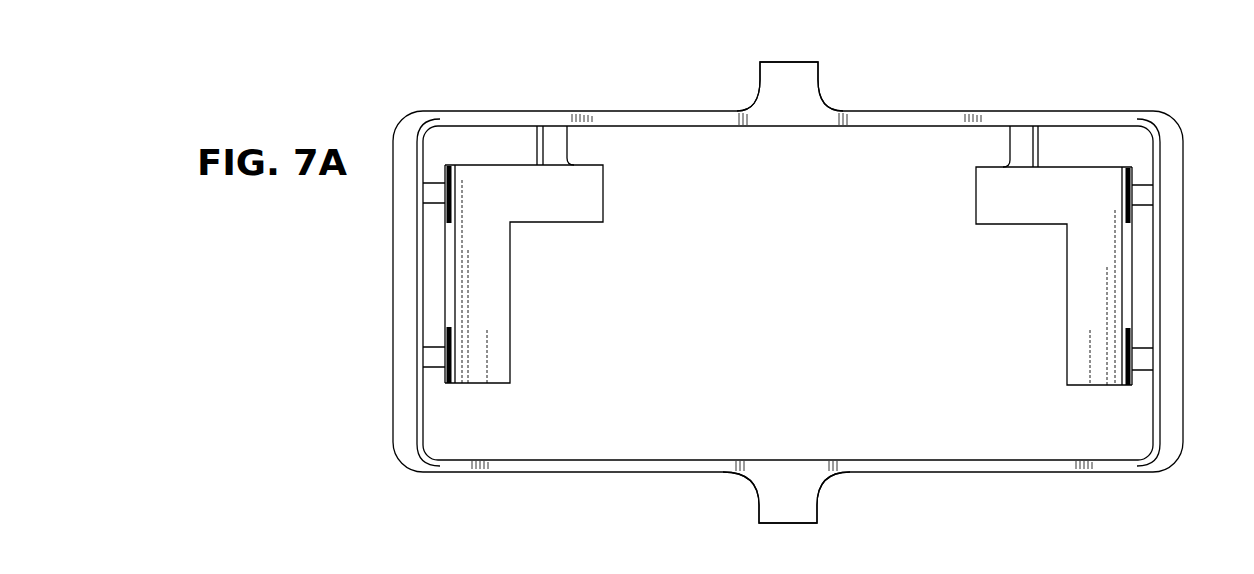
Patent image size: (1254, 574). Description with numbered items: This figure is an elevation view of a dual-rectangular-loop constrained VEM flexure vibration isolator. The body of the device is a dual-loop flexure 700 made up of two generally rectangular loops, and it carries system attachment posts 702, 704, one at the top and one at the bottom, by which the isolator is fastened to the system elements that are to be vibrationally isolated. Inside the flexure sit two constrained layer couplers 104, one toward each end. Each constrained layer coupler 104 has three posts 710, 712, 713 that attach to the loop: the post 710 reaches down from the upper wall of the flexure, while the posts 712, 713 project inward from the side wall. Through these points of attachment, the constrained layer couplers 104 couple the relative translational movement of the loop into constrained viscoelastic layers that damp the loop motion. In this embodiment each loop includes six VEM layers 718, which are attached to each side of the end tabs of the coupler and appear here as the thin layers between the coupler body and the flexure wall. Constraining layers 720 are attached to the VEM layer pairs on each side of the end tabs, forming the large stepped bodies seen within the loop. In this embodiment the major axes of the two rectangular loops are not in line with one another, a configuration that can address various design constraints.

The dual-loop flexure 700 is at (1167, 133).
The system attachment post 702 is at (823, 86).
The system attachment post 704 is at (808, 501).
The post 710 is at (1010, 152).
The post 712 is at (1143, 206).
The post 713 is at (1143, 348).
The VEM layer 718 is at (452, 166).
The constraining layer 720 is at (988, 214).
The constrained layer coupler 104 is at (788, 275).